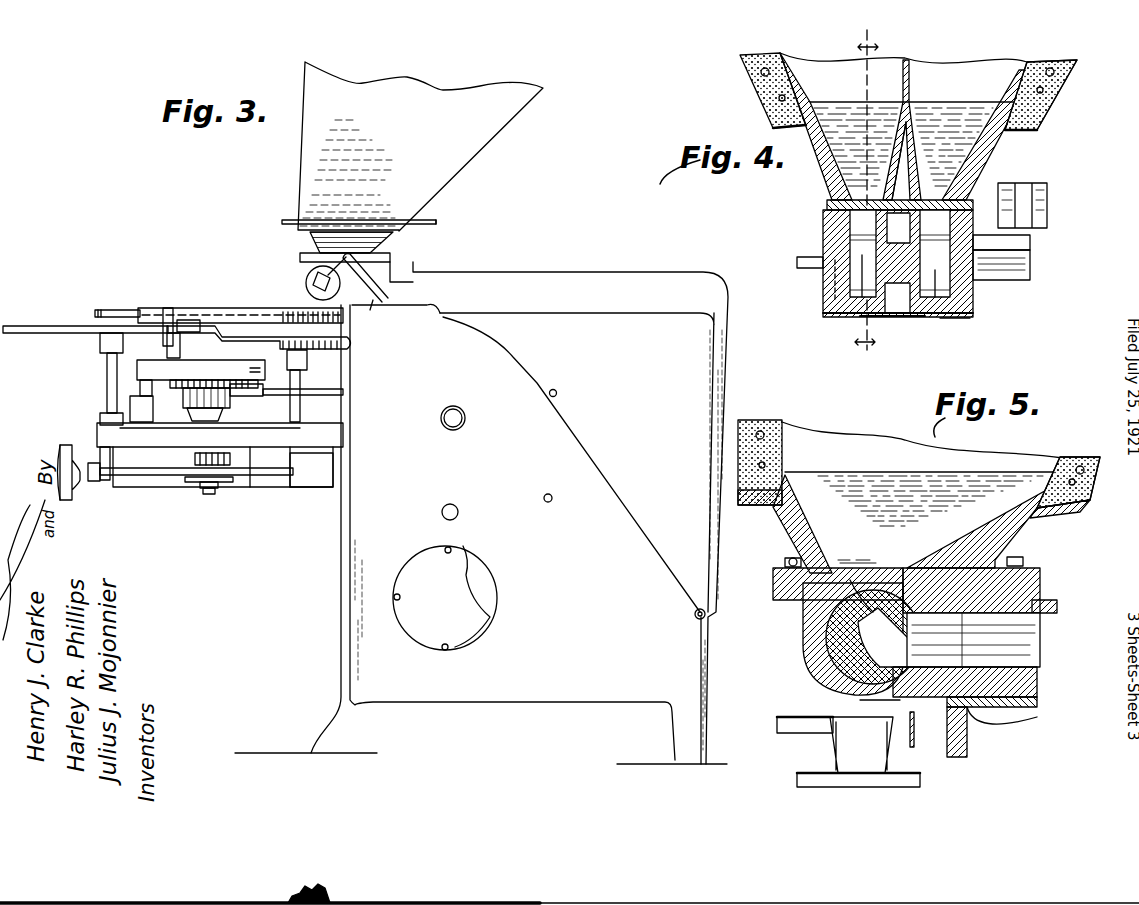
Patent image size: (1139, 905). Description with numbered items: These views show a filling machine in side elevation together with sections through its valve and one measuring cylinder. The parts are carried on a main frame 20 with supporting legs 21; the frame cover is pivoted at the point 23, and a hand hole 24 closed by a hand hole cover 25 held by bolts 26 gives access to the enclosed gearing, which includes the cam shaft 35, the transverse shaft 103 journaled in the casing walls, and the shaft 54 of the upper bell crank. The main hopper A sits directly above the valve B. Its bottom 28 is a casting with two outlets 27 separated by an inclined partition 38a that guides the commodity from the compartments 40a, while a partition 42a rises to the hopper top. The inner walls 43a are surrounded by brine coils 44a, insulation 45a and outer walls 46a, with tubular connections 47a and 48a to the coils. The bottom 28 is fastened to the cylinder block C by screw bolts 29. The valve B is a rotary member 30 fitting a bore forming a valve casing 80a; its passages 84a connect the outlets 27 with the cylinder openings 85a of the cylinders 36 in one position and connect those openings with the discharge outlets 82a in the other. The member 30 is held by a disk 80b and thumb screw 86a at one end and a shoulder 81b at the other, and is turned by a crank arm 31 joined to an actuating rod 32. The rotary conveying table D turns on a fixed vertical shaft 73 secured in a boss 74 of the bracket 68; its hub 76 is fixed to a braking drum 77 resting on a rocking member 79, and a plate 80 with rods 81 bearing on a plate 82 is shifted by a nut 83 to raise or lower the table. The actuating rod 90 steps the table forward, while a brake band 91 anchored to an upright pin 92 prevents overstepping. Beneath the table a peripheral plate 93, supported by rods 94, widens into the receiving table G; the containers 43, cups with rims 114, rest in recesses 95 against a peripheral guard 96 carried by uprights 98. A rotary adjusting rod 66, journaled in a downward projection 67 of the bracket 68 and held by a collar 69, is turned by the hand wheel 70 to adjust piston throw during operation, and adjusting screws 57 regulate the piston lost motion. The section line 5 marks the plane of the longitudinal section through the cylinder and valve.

In FIG. 3, the main hopper A is at (376, 95).
In FIG. 4, the main hopper A is at (732, 61).
In FIG. 5, the main hopper A is at (796, 443).
In FIG. 3, the valve B is at (300, 286).
In FIG. 4, the valve B is at (815, 235).
In FIG. 5, the valve B is at (814, 645).
In FIG. 3, the cylinder block C is at (410, 272).
In FIG. 5, the cylinder block C is at (1057, 607).
In FIG. 3, the rotary conveying member D is at (118, 308).
In FIG. 3, the receiving table G is at (35, 322).
In FIG. 4, the section line 5 is at (866, 194).
In FIG. 3, the main frame 20 is at (339, 630).
In FIG. 3, the supporting legs 21 is at (342, 738).
In FIG. 3, the pivot point 23 is at (694, 613).
In FIG. 3, the hand hole 24 is at (495, 585).
In FIG. 3, the hand hole cover 25 is at (494, 618).
In FIG. 3, the bolts 26 is at (445, 548).
In FIG. 4, the outlets 27 is at (820, 170).
In FIG. 5, the outlets 27 is at (830, 525).
In FIG. 3, the hopper bottom 28 is at (312, 235).
In FIG. 4, the hopper bottom 28 is at (812, 150).
In FIG. 5, the hopper bottom 28 is at (790, 560).
In FIG. 3, the screw bolts 29 is at (302, 256).
In FIG. 5, the screw bolts 29 is at (778, 570).
In FIG. 3, the rotary member 30 is at (308, 288).
In FIG. 4, the rotary member 30 is at (975, 312).
In FIG. 5, the rotary member 30 is at (805, 618).
In FIG. 3, the crank arm 31 is at (325, 280).
In FIG. 4, the crank arm 31 is at (1031, 240).
In FIG. 3, the actuating rod 32 is at (372, 306).
In FIG. 4, the actuating rod 32 is at (1047, 186).
In FIG. 3, the cam shaft 35 is at (465, 420).
In FIG. 5, the cylinders 36 is at (1038, 668).
In FIG. 5, the containers 43 is at (838, 752).
In FIG. 3, the shaft 54 is at (554, 390).
In FIG. 3, the adjusting screw 57 is at (550, 494).
In FIG. 3, the rotary adjusting rod 66 is at (262, 477).
In FIG. 3, the downward projection 67 is at (97, 448).
In FIG. 3, the bracket 68 is at (293, 490).
In FIG. 3, the collar 69 is at (105, 472).
In FIG. 3, the hand wheel 70 is at (70, 496).
In FIG. 3, the fixed vertical shaft 73 is at (209, 495).
In FIG. 3, the boss 74 is at (212, 478).
In FIG. 3, the hub 76 is at (190, 340).
In FIG. 3, the braking drum 77 is at (165, 358).
In FIG. 3, the rocking member 79 is at (192, 394).
In FIG. 3, the plate 80 is at (222, 412).
In FIG. 3, the rods 81 is at (190, 463).
In FIG. 3, the plate 82 is at (192, 483).
In FIG. 3, the nut 83 is at (200, 485).
In FIG. 3, the actuating rod 90 is at (332, 396).
In FIG. 3, the brake band 91 is at (137, 368).
In FIG. 3, the upright pin 92 is at (140, 385).
In FIG. 3, the peripheral plate 93 is at (350, 347).
In FIG. 3, the legs 94 is at (103, 362).
In FIG. 3, the recesses 95 is at (95, 313).
In FIG. 3, the peripheral guard 96 is at (212, 308).
In FIG. 3, the uprights 98 is at (167, 306).
In FIG. 3, the transverse shaft 103 is at (458, 490).
In FIG. 5, the rims 114 is at (805, 717).
In FIG. 4, the partition 38a is at (912, 135).
In FIG. 4, the compartments 40a is at (825, 80).
In FIG. 5, the compartments 40a is at (888, 458).
In FIG. 4, the partition 42a is at (910, 62).
In FIG. 4, the inner walls 43a is at (790, 48).
In FIG. 5, the inner walls 43a is at (799, 443).
In FIG. 4, the brine coils 44a is at (775, 118).
In FIG. 5, the brine coils 44a is at (775, 428).
In FIG. 4, the insulation 45a is at (770, 98).
In FIG. 5, the insulation 45a is at (1078, 455).
In FIG. 4, the outer walls 46a is at (752, 72).
In FIG. 5, the outer walls 46a is at (745, 420).
In FIG. 3, the tubular connection 47a is at (280, 222).
In FIG. 3, the tubular connection 48a is at (437, 222).
In FIG. 4, the valve casing 80a is at (835, 317).
In FIG. 5, the valve casing 80a is at (805, 660).
In FIG. 4, the disk 80b is at (840, 280).
In FIG. 4, the shoulder 81b is at (963, 318).
In FIG. 4, the discharge openings 82a is at (880, 318).
In FIG. 5, the discharge openings 82a is at (877, 697).
In FIG. 4, the passages 84a is at (858, 280).
In FIG. 5, the passages 84a is at (885, 592).
In FIG. 5, the cylinder openings 85a is at (945, 642).
In FIG. 4, the thumb screw 86a is at (797, 263).